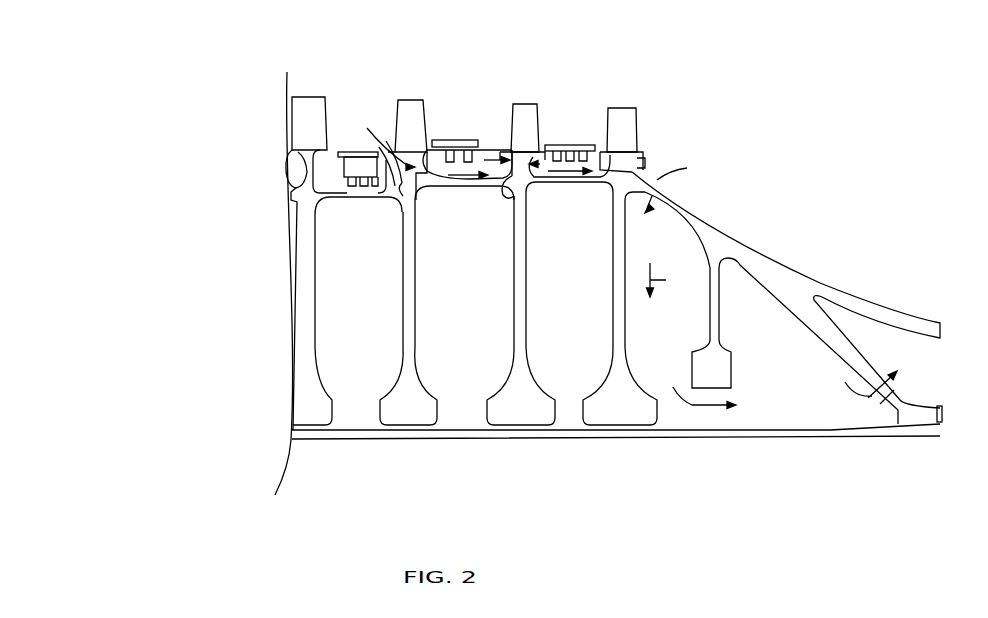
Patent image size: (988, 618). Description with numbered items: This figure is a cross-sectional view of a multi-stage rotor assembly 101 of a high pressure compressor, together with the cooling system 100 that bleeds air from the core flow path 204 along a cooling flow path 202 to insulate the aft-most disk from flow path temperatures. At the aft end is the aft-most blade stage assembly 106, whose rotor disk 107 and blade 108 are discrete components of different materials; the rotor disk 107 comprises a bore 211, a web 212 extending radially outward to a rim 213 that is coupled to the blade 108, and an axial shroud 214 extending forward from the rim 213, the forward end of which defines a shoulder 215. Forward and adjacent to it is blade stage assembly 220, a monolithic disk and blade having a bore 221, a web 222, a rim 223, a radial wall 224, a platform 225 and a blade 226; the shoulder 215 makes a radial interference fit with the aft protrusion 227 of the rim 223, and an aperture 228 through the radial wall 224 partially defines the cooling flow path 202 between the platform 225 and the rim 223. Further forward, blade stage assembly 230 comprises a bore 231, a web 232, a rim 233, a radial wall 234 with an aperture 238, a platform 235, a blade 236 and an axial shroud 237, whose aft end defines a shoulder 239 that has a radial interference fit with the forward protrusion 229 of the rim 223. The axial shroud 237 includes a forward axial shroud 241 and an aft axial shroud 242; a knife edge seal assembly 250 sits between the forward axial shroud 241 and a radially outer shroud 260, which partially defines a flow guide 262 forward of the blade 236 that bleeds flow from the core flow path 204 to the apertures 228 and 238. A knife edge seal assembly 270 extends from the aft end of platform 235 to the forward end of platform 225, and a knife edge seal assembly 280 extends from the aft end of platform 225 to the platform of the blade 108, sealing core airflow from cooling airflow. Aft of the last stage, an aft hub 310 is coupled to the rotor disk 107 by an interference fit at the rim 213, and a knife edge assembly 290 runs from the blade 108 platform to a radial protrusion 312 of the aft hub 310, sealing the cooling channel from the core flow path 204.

The cooling system 100 is at (550, 184).
The multi-stage rotor assembly 101 is at (75, 60).
The aft-most blade stage assembly 106 is at (654, 101).
The rotor disk 107 is at (617, 267).
The blade 108 is at (630, 140).
The cooling flow path 202 is at (621, 261).
The core flow path 204 is at (268, 127).
The bore 211 is at (618, 383).
The web 212 is at (622, 318).
The rim 213 is at (622, 192).
The axial shroud 214 is at (578, 181).
The shoulder 215 is at (543, 182).
The blade stage assembly 220 is at (534, 86).
The bore 221 is at (512, 382).
The web 222 is at (517, 317).
The rim 223 is at (512, 184).
The radial wall 224 is at (507, 173).
The platform 225 is at (512, 144).
The blade 226 is at (533, 128).
The aft protrusion 227 is at (516, 202).
The aperture 228 is at (483, 154).
The forward protrusion 229 is at (476, 151).
The blade stage assembly 230 is at (429, 84).
The bore 231 is at (400, 395).
The web 232 is at (407, 328).
The rim 233 is at (393, 178).
The radial wall 234 is at (428, 183).
The platform 235 is at (413, 150).
The blade 236 is at (405, 116).
The axial shroud 237 is at (357, 196).
The aperture 238 is at (392, 157).
The shoulder 239 is at (455, 172).
The forward axial shroud 241 is at (345, 194).
The aft axial shroud 242 is at (459, 200).
The knife edge seal assembly 250 is at (344, 132).
The radially outer shroud 260 is at (289, 95).
The flow guide 262 is at (390, 184).
The knife edge seal assembly 270 is at (438, 128).
The knife edge seal assembly 280 is at (575, 136).
The knife edge assembly 290 is at (645, 157).
The aft hub 310 is at (743, 257).
The radial protrusion 312 is at (660, 193).